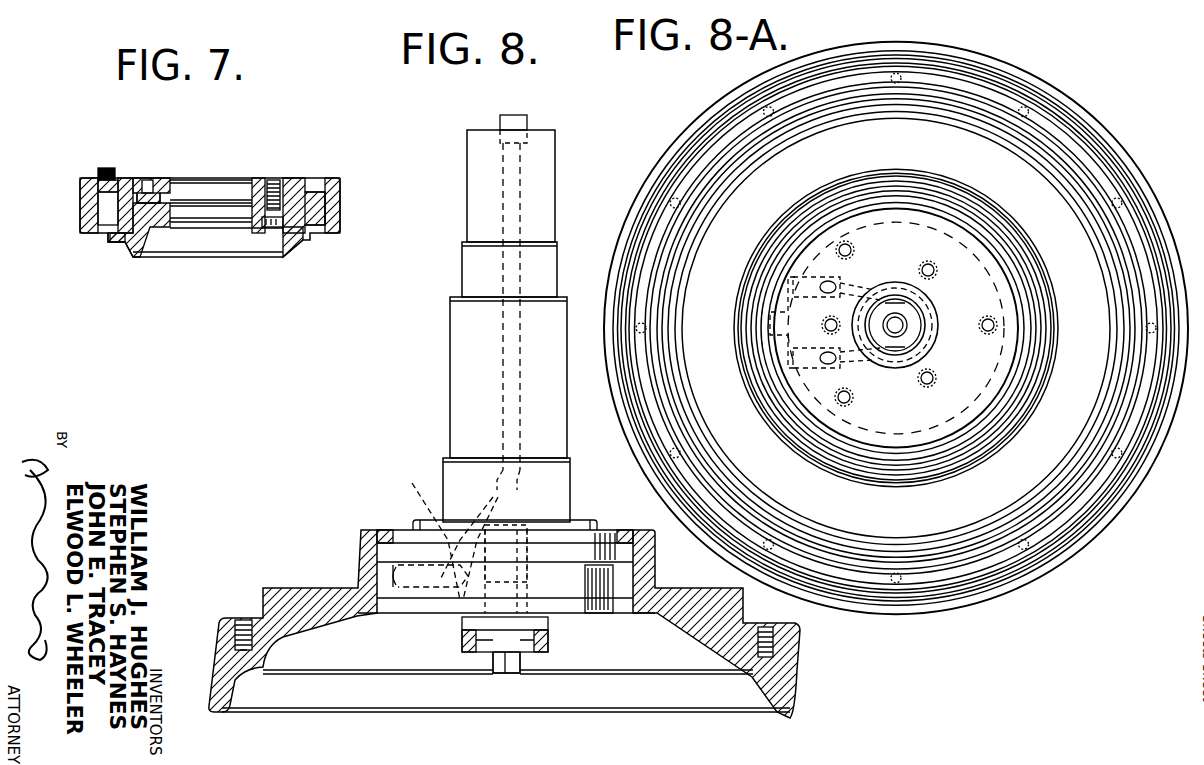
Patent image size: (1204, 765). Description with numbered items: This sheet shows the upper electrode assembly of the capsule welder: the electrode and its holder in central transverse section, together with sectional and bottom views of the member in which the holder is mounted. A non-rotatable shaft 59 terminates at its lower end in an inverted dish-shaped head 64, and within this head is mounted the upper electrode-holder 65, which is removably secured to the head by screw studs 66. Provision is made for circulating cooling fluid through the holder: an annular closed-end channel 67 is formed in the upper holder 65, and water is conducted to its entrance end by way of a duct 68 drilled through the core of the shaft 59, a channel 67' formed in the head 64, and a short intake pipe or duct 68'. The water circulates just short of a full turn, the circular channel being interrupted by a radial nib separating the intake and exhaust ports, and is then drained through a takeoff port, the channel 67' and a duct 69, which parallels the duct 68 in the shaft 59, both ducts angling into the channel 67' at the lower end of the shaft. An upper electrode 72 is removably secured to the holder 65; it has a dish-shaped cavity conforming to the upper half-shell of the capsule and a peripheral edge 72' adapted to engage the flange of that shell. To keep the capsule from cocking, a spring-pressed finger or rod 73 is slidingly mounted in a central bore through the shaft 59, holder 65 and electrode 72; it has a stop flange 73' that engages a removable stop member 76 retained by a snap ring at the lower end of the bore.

In FIG. 8, the non-rotatable shaft 59 is at (450, 333).
In FIG. 8, the inverted dish-shaped head 64 is at (285, 590).
In FIG. 8A, the inverted dish-shaped head 64 is at (1085, 90).
In FIG. 7, the upper electrode-holder 65 is at (340, 203).
In FIG. 7, the screw studs 66 is at (148, 178).
In FIG. 7, the annular closed-end channel 67 is at (85, 207).
In FIG. 8A, the annular closed-end channel 67 is at (876, 339).
In FIG. 8, the channel 67' is at (548, 573).
In FIG. 8, the duct 68 is at (457, 371).
In FIG. 8A, the duct 68 is at (895, 303).
In FIG. 7, the short intake pipe or duct 68' is at (86, 165).
In FIG. 8A, the duct 69 is at (850, 355).
In FIG. 7, the upper electrode 72 is at (147, 249).
In FIG. 7, the peripheral edge 72' is at (117, 264).
In FIG. 8, the spring-pressed finger or rod 73 is at (483, 678).
In FIG. 8A, the spring-pressed finger or rod 73 is at (930, 309).
In FIG. 8, the stop flange 73' is at (535, 636).
In FIG. 8, the removable stop member 76 is at (530, 650).